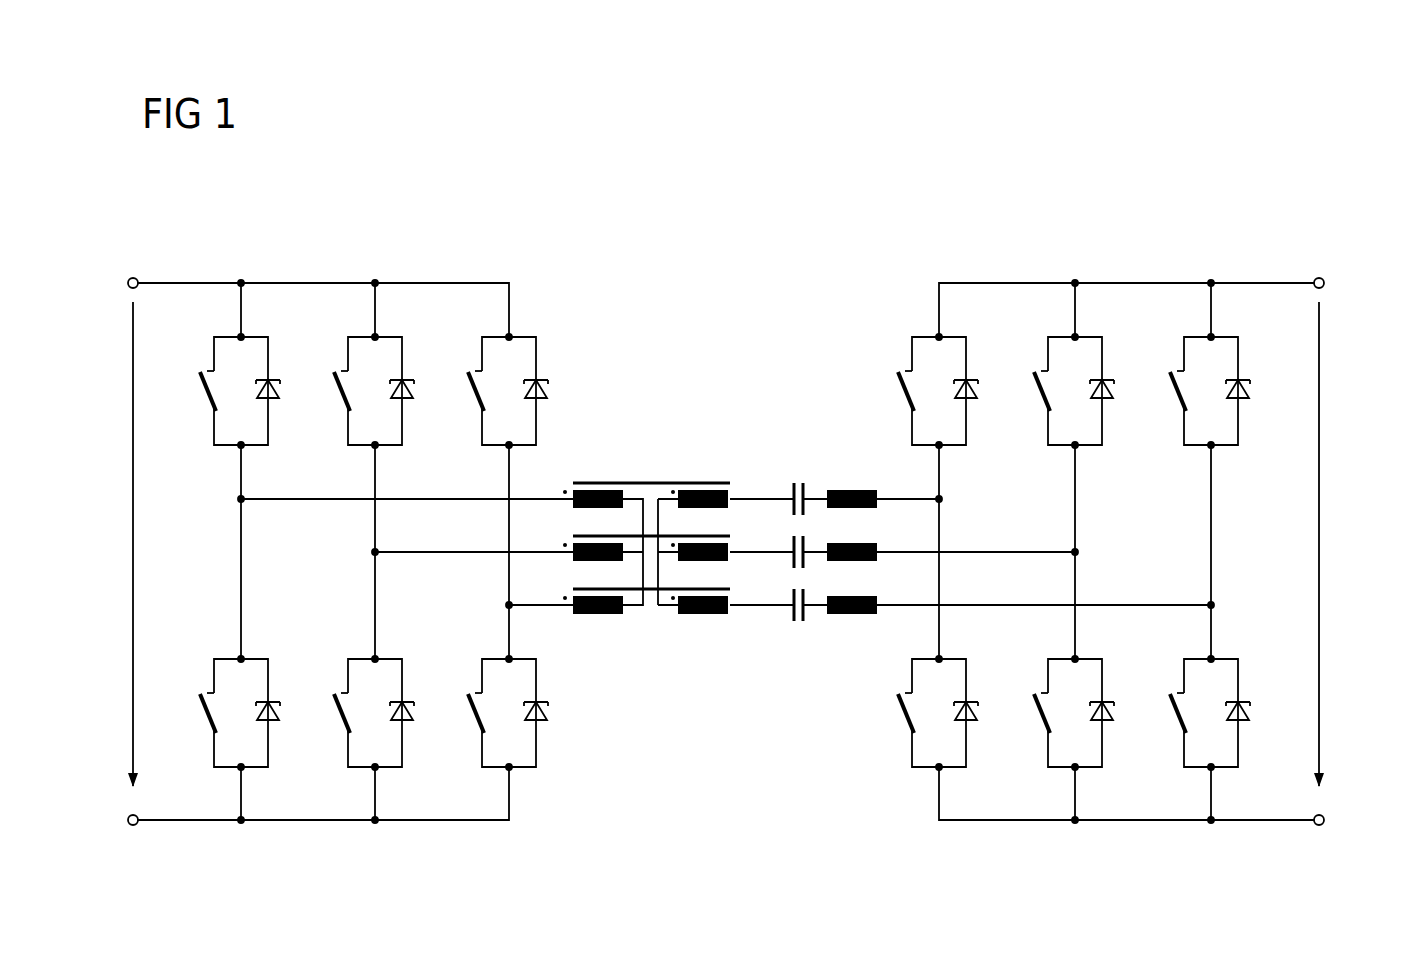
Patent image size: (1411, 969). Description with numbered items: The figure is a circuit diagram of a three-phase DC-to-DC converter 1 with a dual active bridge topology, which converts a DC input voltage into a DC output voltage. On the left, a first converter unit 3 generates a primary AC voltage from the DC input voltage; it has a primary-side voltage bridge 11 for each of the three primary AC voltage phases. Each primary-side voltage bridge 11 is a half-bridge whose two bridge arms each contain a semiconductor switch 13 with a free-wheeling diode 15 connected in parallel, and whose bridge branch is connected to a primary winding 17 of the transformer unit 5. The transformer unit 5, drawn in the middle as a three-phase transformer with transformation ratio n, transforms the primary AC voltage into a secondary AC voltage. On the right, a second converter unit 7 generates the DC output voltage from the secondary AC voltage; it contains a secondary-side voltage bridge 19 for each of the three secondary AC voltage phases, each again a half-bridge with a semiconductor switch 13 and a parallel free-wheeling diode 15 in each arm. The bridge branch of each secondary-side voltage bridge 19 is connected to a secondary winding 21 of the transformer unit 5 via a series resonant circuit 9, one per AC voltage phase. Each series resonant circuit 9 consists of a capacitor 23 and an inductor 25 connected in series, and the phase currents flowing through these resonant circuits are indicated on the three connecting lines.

The three-phase DC-to-DC converter 1 is at (722, 238).
The first converter unit 3 is at (329, 268).
The transformer unit 5 is at (650, 622).
The second converter unit 7 is at (1145, 268).
The series resonant circuit 9 is at (814, 471).
The primary-side voltage bridge 11 is at (233, 513).
The semiconductor switch 13 is at (202, 392).
The free-wheeling diode 15 is at (278, 393).
The primary winding 17 is at (600, 617).
The secondary-side voltage bridge 19 is at (1222, 597).
The secondary winding 21 is at (705, 617).
The capacitor 23 is at (800, 626).
The inductor 25 is at (855, 617).